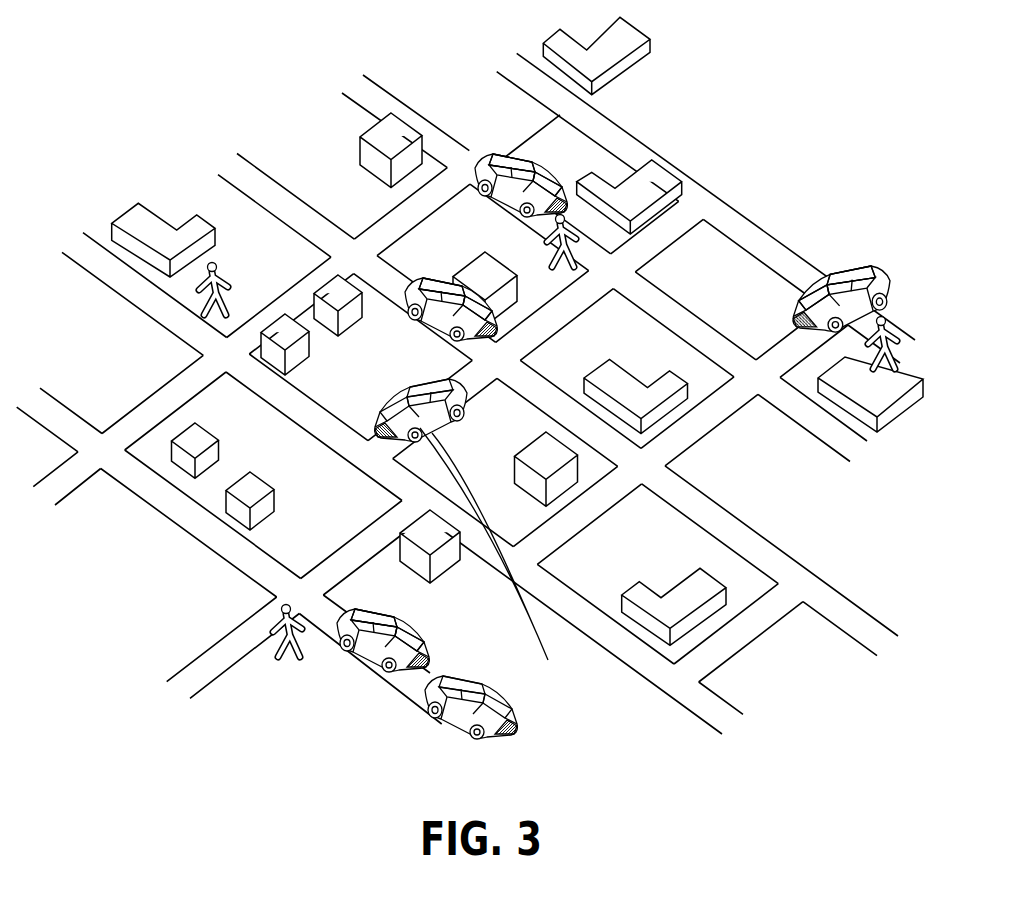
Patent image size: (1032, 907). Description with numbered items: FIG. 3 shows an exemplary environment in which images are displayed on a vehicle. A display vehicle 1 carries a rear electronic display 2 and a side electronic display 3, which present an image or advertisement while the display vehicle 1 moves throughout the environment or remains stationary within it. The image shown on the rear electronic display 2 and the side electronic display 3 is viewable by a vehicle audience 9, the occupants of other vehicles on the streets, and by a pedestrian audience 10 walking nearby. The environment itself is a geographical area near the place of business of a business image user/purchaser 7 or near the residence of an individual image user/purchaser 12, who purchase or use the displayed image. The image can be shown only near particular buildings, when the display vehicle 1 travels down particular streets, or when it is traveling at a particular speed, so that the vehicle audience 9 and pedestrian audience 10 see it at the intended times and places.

The display vehicle 1 is at (543, 165).
The rear electronic display 2 is at (520, 200).
The side electronic display 3 is at (562, 180).
The business image user/purchaser 7 is at (357, 153).
The vehicle audience 9 is at (485, 693).
The pedestrian audience 10 is at (548, 262).
The individual image user/purchaser 12 is at (233, 281).